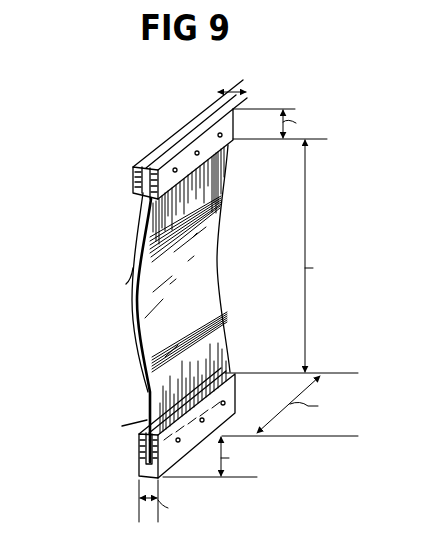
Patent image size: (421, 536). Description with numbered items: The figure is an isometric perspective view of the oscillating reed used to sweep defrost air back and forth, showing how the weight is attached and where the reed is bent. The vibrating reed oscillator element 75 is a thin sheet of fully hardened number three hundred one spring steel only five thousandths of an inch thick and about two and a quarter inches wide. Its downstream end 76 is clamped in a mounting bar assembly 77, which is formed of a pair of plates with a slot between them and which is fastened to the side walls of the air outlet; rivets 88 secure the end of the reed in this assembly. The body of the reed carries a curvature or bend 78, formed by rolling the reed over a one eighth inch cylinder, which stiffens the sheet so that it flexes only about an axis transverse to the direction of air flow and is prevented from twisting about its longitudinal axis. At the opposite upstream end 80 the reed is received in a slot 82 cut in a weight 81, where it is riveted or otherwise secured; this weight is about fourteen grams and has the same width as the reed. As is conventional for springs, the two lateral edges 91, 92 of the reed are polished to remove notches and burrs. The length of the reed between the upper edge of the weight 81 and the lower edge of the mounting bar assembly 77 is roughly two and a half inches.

The vibrating reed oscillator element 75 is at (227, 188).
The downstream end of reed element 76 is at (141, 200).
The mounting bar assembly 77 is at (153, 128).
The bend 78 is at (204, 261).
The upstream end of reed element 80 is at (236, 373).
The weight 81 is at (140, 470).
The slot 82 is at (146, 452).
The rivets 88 is at (222, 136).
The edge of reed element 91 is at (132, 328).
The edge of reed element 92 is at (221, 295).